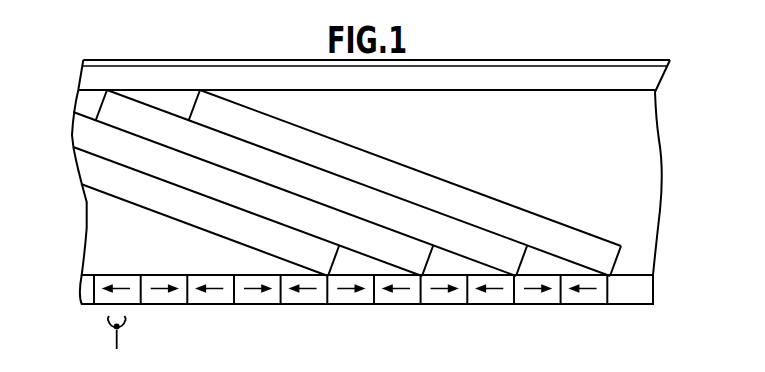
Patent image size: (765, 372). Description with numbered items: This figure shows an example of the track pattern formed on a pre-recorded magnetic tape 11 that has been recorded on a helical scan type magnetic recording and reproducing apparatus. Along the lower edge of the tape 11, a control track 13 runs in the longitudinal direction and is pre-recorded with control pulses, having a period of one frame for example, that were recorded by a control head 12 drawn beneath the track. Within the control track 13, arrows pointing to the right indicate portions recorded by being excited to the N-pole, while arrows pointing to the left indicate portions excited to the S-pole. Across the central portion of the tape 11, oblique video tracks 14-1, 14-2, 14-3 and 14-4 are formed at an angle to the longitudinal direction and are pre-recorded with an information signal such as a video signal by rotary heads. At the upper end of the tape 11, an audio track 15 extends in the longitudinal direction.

The pre-recorded magnetic tape 11 is at (655, 195).
The control head 12 is at (127, 322).
The control track 13 is at (653, 290).
The video track 14-1 is at (135, 192).
The video track 14-2 is at (90, 135).
The video track 14-3 is at (137, 115).
The video track 14-4 is at (300, 142).
The audio track 15 is at (654, 80).